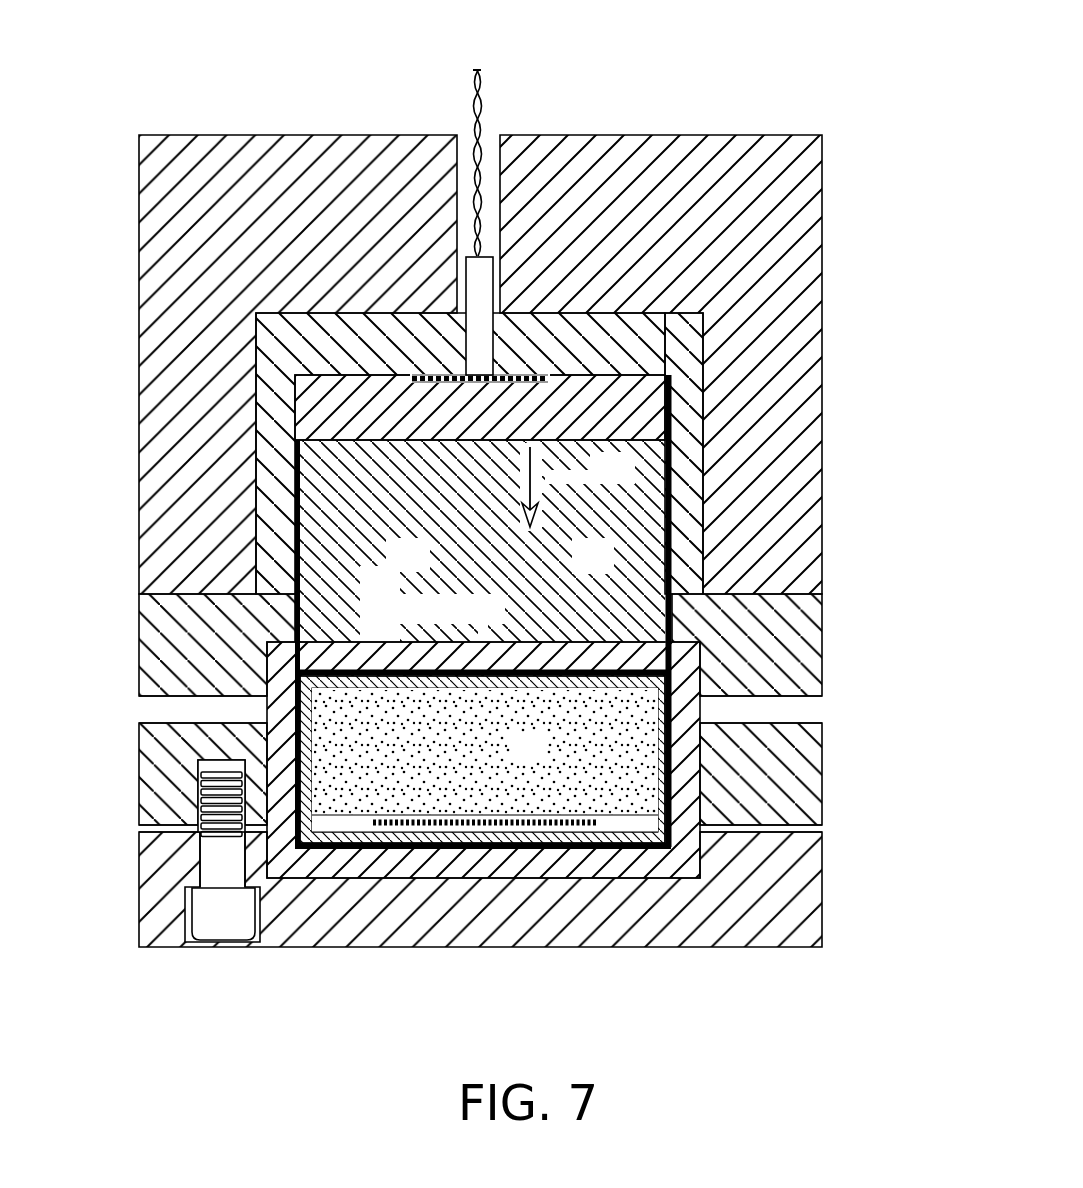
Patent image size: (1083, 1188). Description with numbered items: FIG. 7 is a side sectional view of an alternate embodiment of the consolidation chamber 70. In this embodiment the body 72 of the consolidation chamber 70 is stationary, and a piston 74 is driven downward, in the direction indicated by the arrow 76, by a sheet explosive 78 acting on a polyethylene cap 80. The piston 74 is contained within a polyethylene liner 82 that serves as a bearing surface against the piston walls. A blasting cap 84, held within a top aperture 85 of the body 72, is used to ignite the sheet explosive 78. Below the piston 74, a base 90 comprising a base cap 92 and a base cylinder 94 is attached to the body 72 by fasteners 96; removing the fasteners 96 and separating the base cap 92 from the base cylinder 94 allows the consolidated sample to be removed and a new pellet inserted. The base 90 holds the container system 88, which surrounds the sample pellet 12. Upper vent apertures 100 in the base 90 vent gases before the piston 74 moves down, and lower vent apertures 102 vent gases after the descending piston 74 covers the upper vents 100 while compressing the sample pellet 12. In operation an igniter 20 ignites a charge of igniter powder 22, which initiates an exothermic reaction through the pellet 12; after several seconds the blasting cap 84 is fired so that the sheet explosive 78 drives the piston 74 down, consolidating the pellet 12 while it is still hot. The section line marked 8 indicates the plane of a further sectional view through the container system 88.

The section line 8- 8 is at (499, 608).
The powder pellet 12 is at (544, 762).
The igniter 20 is at (498, 830).
The igniter powder 22 is at (558, 830).
The consolidation chamber 70 is at (652, 82).
The body 72 is at (785, 210).
The piston 74 is at (606, 570).
The arrow 76 is at (536, 482).
The sheet explosive 78 is at (427, 373).
The polyethylene cap 80 is at (643, 403).
The polyethylene liner 82 is at (683, 342).
The blasting cap 84 is at (491, 255).
The top aperture 85 is at (467, 137).
The container system 88 is at (373, 628).
The base 90 is at (126, 904).
The base cap 92 is at (800, 895).
The base cylinder 94 is at (800, 625).
The fasteners 96 is at (225, 945).
The upper vent apertures 100 is at (800, 705).
The lower vent apertures 102 is at (822, 829).